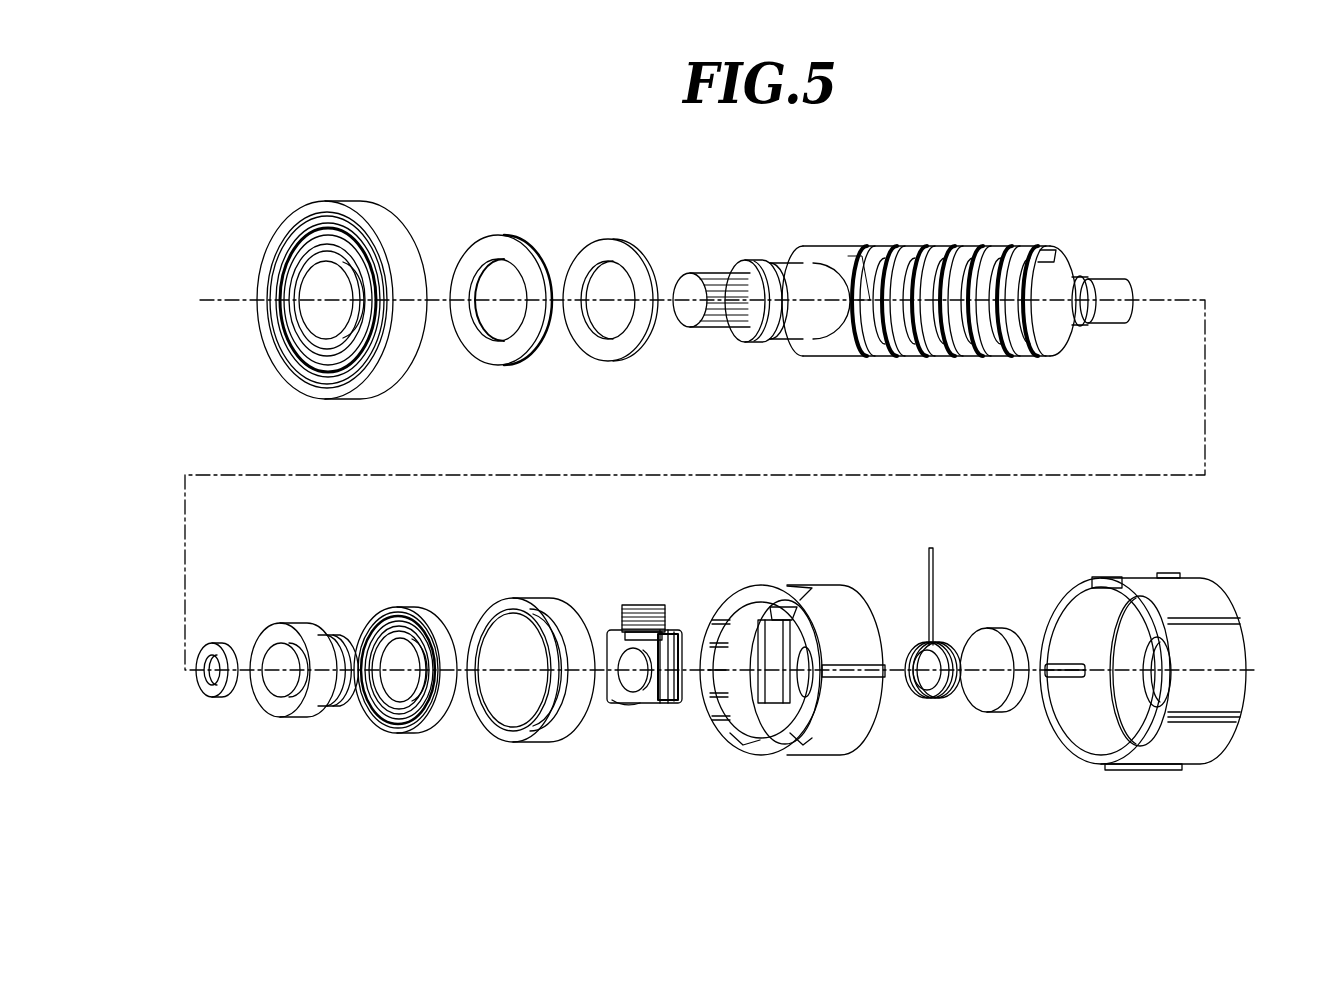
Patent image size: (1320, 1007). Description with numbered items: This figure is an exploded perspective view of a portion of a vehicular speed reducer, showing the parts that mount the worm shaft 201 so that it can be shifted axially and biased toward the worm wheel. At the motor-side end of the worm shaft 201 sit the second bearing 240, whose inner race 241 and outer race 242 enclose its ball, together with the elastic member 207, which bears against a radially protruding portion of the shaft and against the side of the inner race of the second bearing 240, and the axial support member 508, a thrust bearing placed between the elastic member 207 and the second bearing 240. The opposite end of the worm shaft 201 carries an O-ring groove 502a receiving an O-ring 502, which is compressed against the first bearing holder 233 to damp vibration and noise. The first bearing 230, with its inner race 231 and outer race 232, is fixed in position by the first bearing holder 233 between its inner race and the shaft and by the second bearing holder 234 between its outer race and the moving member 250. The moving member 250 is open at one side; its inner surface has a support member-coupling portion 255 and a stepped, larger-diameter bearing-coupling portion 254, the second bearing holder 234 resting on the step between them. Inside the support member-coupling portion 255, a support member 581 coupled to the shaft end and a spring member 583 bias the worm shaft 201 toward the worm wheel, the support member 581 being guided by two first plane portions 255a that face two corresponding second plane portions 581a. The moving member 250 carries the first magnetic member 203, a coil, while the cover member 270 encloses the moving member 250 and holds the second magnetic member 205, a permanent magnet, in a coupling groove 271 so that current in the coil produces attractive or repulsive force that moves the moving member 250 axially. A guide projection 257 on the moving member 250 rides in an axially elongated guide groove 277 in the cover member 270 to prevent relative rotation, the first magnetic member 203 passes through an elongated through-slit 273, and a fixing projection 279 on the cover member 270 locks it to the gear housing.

The second bearing 240 is at (341, 279).
The inner race 241 is at (332, 338).
The outer race 242 is at (400, 363).
The axial support member 508 is at (513, 262).
The elastic member 207 is at (623, 259).
The worm shaft 201 is at (910, 258).
The O-ring groove 502a is at (1089, 282).
The O-ring 502 is at (230, 719).
The first bearing holder 233 is at (304, 623).
The first bearing 230 is at (381, 653).
The inner race 231 is at (372, 732).
The outer race 232 is at (418, 735).
The second bearing holder 234 is at (531, 625).
The spring member 583 is at (634, 605).
The support member 581 is at (617, 702).
The second plane portions 581a is at (672, 706).
The first plane portions 255a is at (735, 606).
The support member-coupling portion 255 is at (778, 600).
The moving member 250 is at (795, 668).
The bearing-coupling portion 254 is at (755, 742).
The guide projection 257 is at (850, 678).
The first magnetic member 203 is at (959, 595).
The second magnetic member 205 is at (1006, 622).
The through-slit 273 is at (1103, 578).
The cover member 270 is at (1127, 654).
The coupling groove 271 is at (1165, 660).
The guide groove 277 is at (1055, 682).
The fixing projection 279 is at (1183, 722).